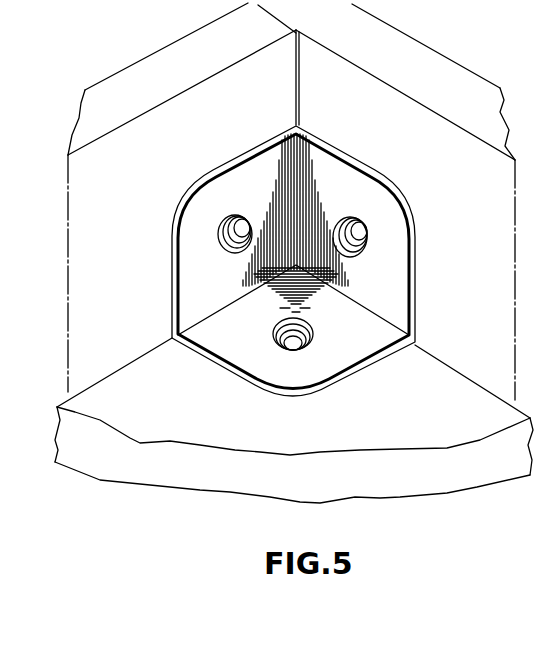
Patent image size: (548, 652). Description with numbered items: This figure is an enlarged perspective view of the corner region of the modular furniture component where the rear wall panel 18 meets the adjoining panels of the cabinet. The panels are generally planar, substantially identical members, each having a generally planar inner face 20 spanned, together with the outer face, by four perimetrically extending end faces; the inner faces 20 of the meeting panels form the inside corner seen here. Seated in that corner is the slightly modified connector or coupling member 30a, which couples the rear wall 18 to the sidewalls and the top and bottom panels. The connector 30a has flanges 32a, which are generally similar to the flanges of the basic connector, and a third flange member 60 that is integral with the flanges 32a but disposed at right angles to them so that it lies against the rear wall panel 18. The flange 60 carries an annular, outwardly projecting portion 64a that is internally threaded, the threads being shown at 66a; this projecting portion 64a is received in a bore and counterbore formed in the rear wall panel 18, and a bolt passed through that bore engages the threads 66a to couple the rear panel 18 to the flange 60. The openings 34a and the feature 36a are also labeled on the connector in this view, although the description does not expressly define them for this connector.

The rear wall panel 18 is at (127, 90).
The inner face 20 is at (385, 445).
The connector 30a is at (215, 102).
The third flange member 60 is at (180, 282).
The flanges 32a is at (398, 246).
The fastener hole 34a is at (357, 230).
The corner hatching region 36a is at (334, 218).
The internal threads 66a is at (230, 220).
The annular, outwardly projecting portion 64a is at (222, 231).